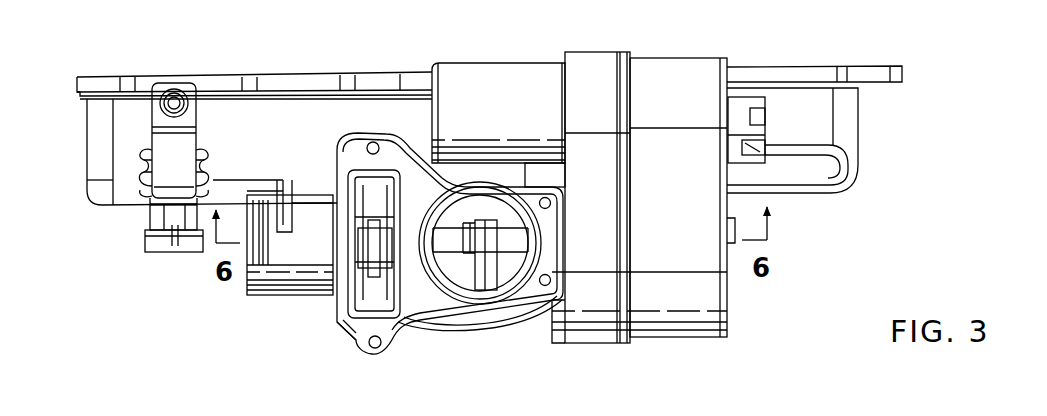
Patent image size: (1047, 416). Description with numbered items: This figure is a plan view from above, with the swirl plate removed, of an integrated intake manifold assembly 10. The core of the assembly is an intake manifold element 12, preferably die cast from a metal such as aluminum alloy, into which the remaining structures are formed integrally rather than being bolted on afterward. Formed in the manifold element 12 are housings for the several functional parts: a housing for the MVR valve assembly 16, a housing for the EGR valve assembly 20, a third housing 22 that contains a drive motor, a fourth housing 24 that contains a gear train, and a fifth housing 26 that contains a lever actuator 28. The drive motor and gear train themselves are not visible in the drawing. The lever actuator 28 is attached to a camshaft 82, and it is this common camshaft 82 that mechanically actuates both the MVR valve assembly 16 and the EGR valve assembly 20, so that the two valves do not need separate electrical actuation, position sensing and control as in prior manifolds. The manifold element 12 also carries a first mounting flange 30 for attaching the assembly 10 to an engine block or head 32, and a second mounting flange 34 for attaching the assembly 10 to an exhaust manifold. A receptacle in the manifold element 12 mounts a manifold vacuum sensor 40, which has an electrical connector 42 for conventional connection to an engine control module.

The integrated intake manifold assembly 10 is at (886, 203).
The intake manifold element 12 is at (97, 164).
The MVR valve assembly 16 is at (497, 327).
The EGR valve assembly 20 is at (327, 317).
The third housing 22 is at (481, 75).
The fourth housing 24 is at (607, 325).
The fifth housing 26 is at (278, 276).
The lever actuator 28 is at (283, 210).
The first mounting flange 30 is at (219, 82).
The engine block or head 32 is at (771, 52).
The second mounting flange 34 is at (362, 335).
The manifold vacuum sensor 40 is at (163, 181).
The electrical connector 42 is at (151, 243).
The camshaft 82 is at (448, 236).